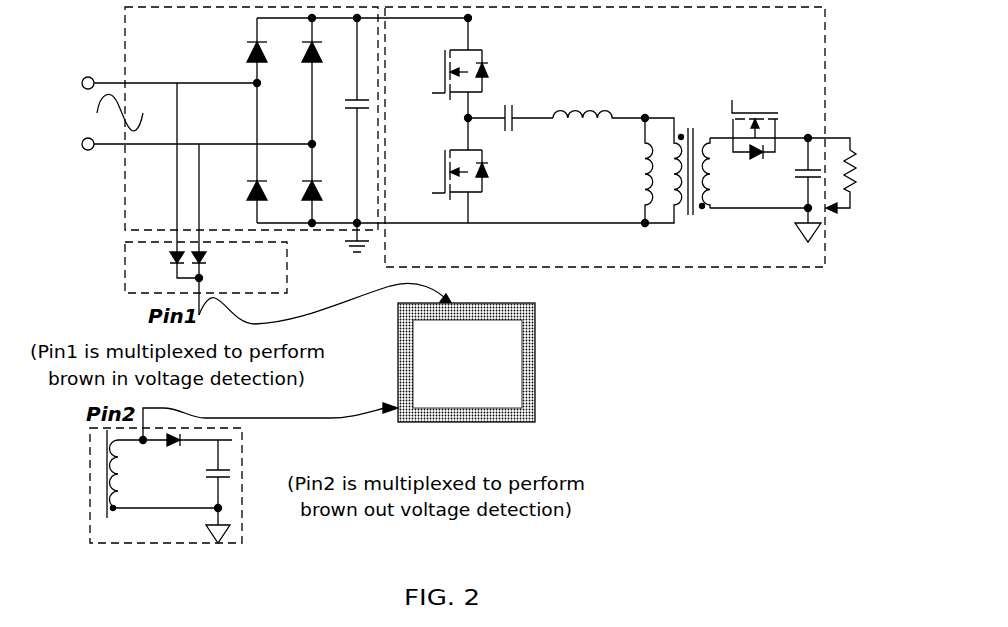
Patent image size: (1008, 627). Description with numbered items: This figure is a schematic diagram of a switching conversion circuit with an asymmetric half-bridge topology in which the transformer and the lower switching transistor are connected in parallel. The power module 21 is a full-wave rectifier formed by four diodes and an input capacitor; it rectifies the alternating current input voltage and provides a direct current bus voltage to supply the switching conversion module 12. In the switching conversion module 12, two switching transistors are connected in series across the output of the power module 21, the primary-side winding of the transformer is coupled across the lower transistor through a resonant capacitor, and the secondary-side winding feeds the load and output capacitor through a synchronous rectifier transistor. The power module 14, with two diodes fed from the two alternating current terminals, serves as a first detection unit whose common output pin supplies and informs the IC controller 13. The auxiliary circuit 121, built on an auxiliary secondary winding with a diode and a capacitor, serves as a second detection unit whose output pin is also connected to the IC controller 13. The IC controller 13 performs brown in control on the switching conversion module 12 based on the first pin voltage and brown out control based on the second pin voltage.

The power module 21 is at (125, 43).
The power module 14 is at (125, 271).
The switching conversion module 12 is at (825, 69).
The IC controller 13 is at (535, 367).
The auxiliary circuit 121 is at (90, 499).